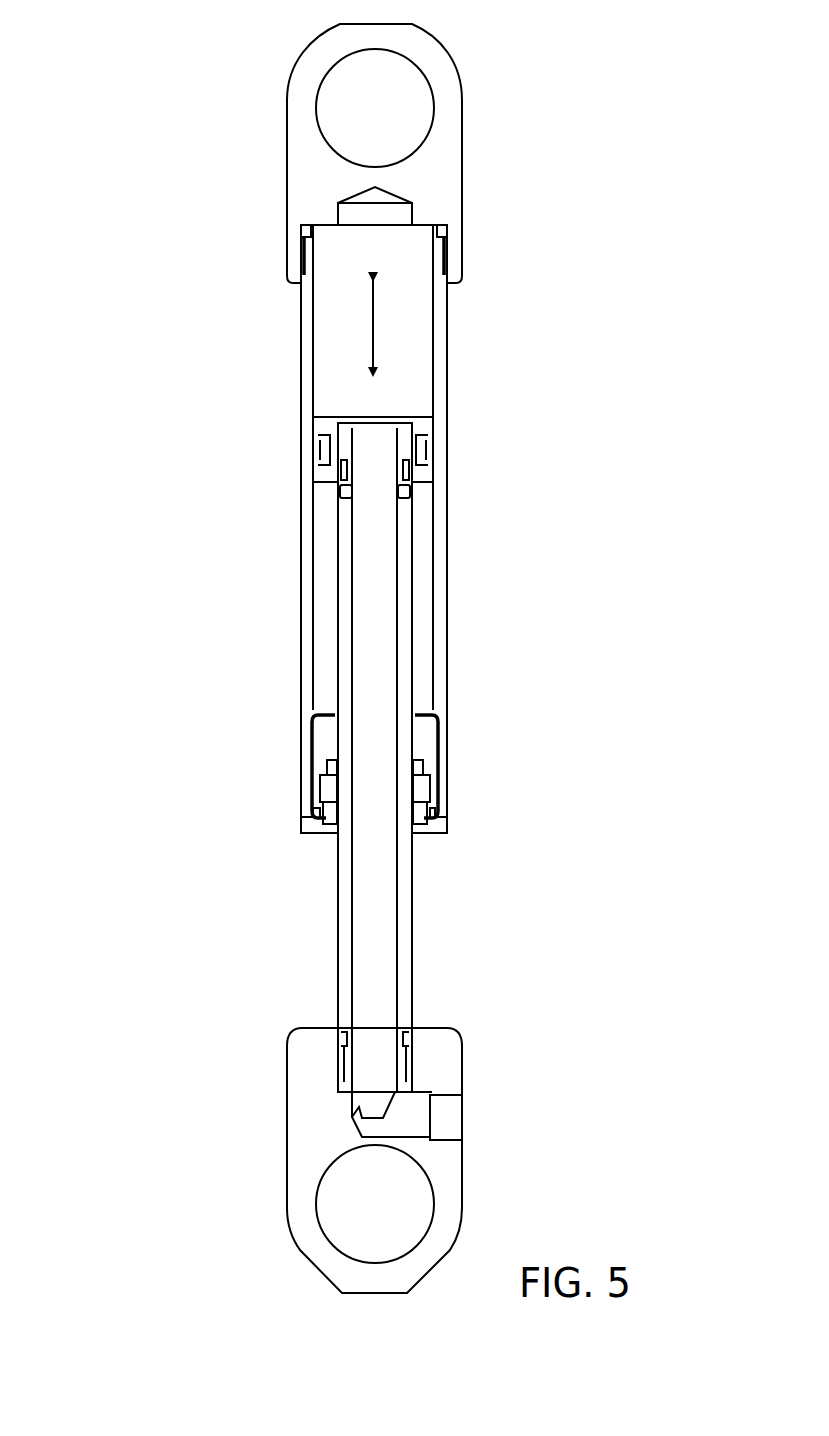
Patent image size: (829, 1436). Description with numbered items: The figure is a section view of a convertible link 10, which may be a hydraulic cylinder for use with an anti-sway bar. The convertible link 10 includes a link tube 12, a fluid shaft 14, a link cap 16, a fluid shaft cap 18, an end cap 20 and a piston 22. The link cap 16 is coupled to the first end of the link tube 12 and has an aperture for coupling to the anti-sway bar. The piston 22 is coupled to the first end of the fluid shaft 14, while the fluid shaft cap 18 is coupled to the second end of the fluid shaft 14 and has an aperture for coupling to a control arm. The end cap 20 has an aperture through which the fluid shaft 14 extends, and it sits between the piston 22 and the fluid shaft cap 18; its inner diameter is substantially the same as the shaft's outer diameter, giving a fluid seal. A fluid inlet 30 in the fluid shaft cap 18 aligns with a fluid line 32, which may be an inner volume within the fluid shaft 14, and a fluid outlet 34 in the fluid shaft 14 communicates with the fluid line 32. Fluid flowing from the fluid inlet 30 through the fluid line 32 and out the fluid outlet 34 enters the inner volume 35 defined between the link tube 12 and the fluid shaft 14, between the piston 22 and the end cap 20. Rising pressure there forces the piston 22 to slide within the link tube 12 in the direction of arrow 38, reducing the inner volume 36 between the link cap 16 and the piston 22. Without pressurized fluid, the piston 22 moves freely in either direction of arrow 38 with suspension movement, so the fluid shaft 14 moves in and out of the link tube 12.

The convertible link 10 is at (170, 90).
The link tube 12 is at (441, 348).
The fluid shaft 14 is at (402, 893).
The link cap 16 is at (448, 160).
The fluid shaft cap 18 is at (311, 1137).
The end cap 20 is at (427, 741).
The piston 22 is at (423, 428).
The fluid inlet 30 is at (436, 1124).
The fluid line 32 is at (372, 886).
The fluid outlet 34 is at (342, 492).
The inner volume 35 is at (325, 612).
The inner volume 36 is at (334, 346).
The arrow 38 is at (375, 323).